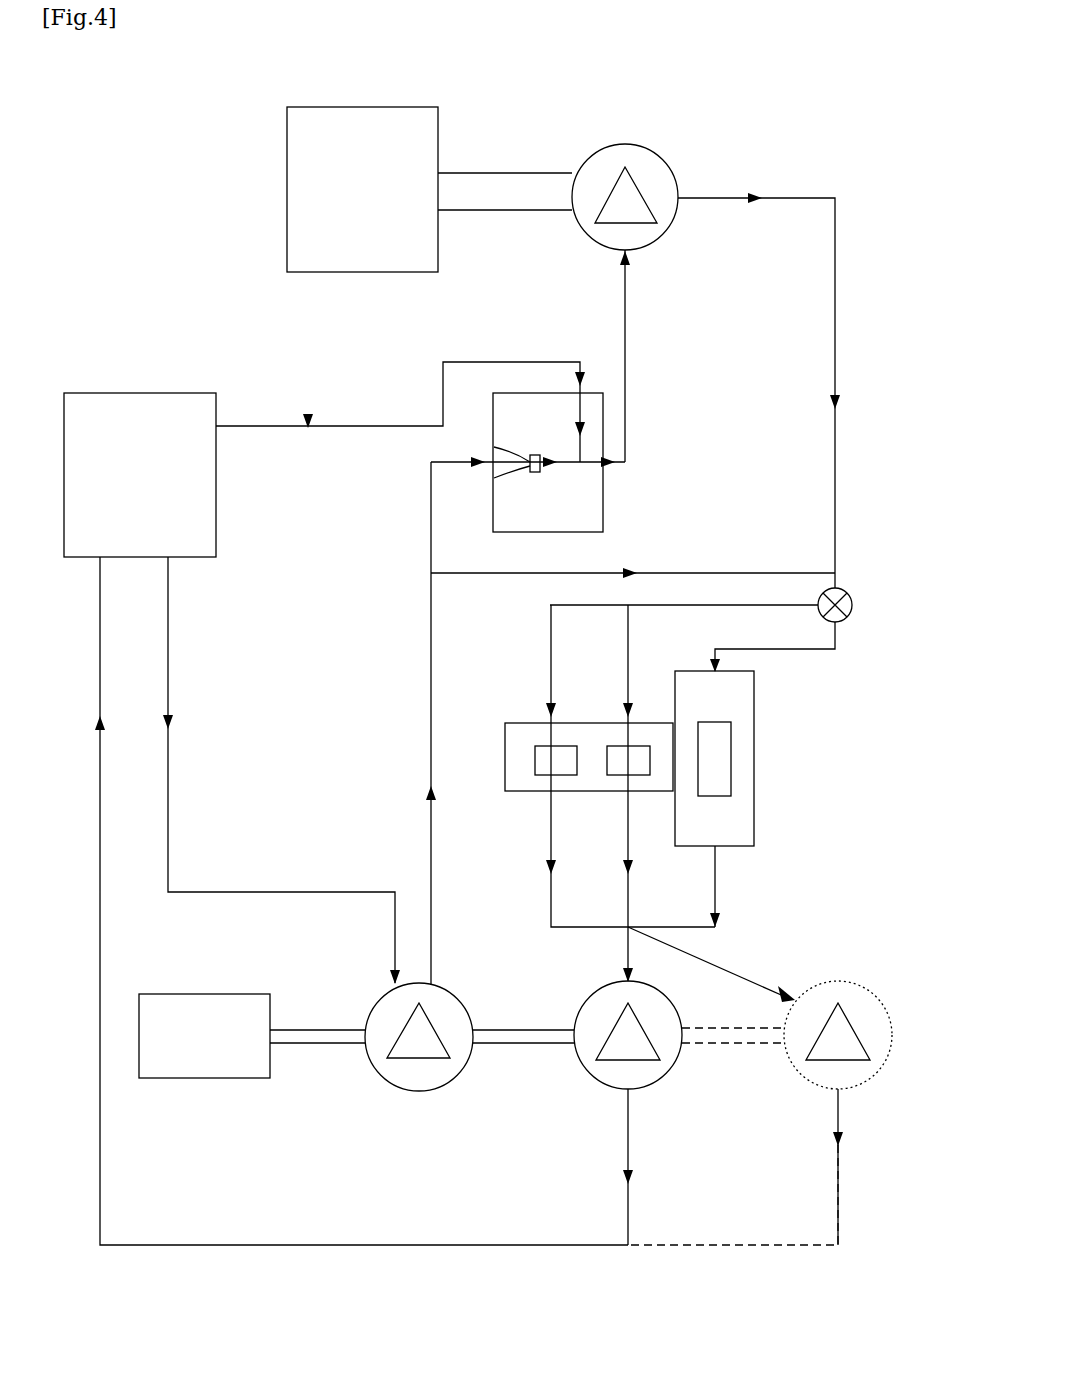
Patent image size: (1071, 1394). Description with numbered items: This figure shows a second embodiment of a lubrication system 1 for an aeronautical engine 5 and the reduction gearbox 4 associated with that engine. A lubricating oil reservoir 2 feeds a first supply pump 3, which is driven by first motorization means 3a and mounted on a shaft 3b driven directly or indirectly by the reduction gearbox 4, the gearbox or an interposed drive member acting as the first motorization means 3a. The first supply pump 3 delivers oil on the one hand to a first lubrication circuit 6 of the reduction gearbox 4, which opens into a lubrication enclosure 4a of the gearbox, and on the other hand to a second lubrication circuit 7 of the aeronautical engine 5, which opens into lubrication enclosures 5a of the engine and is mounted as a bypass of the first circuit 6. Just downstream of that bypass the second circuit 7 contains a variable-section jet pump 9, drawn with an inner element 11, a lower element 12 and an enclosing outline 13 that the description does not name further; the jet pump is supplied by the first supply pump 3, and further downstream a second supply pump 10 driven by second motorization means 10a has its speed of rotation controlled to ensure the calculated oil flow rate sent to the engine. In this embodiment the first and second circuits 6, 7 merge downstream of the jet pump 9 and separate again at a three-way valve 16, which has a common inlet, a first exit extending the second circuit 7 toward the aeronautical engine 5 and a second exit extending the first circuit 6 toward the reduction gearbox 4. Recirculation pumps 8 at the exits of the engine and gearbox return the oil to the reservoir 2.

The lubrication system 1 is at (306, 420).
The lubricating oil reservoir 2 is at (95, 400).
The first supply pump 3 is at (418, 1045).
The first motorization means 3a is at (198, 1075).
The shaft 3b is at (332, 1045).
The reduction gearbox 4 is at (740, 690).
The lubrication enclosure 4a is at (718, 768).
The aeronautical engine 5 is at (513, 732).
The lubrication enclosures 5a is at (548, 768).
The first lubrication circuit 6 is at (431, 636).
The second lubrication circuit 7 is at (835, 340).
The recirculation pumps 8 is at (790, 1065).
The second supply pump 10 is at (645, 160).
The second motorization means 10a is at (372, 108).
The nozzle 11 is at (535, 455).
The diffuser 12 is at (540, 472).
The ejector 13 is at (590, 412).
The three-way valve 16 is at (852, 600).
The variable-section jet pump 9 is at (513, 352).